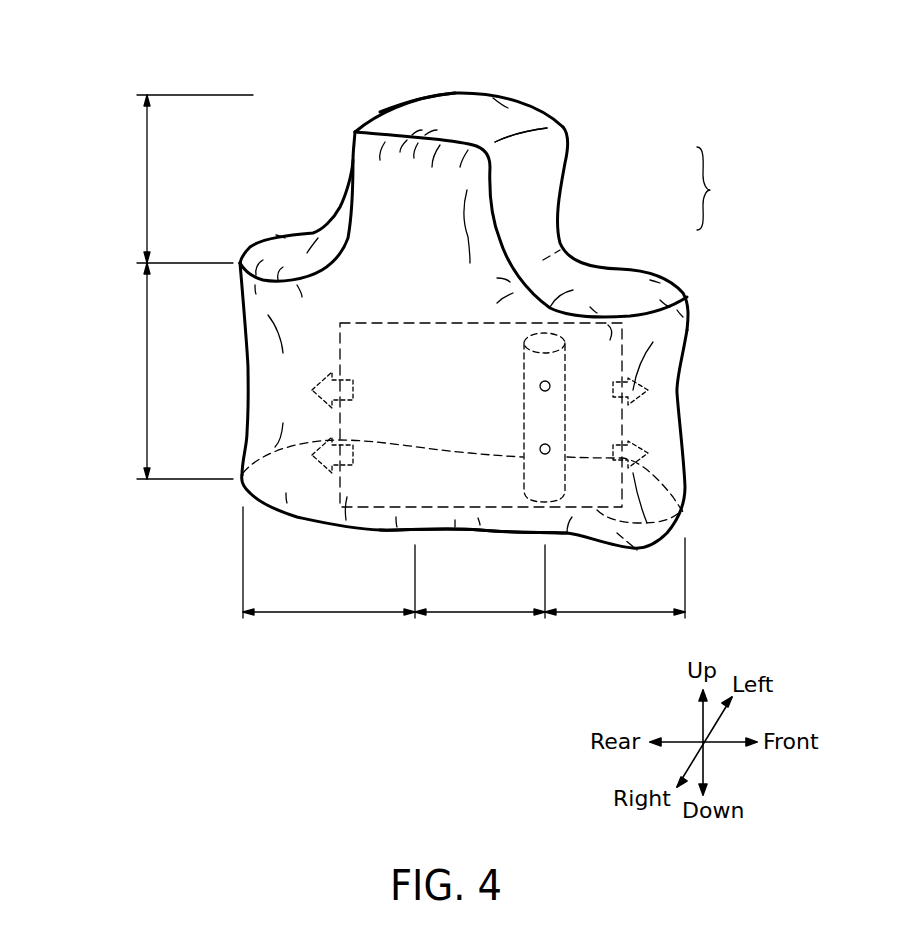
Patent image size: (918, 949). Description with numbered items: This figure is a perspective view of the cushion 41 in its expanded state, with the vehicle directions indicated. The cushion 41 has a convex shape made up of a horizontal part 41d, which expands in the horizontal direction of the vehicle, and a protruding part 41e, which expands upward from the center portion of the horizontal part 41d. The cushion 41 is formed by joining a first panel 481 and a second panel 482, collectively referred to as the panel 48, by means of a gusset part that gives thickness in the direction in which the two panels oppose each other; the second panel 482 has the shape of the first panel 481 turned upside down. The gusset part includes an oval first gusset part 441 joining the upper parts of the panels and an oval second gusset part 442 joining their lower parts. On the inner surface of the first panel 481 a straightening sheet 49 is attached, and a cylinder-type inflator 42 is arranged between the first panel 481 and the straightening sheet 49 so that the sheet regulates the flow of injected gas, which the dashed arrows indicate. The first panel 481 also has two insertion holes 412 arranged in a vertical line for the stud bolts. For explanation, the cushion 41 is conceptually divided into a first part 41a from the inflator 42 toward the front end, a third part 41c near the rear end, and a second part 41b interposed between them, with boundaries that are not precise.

The cushion 41 is at (717, 102).
The first gusset part 441 is at (447, 110).
The second gusset part 442 is at (638, 550).
The panel 48 is at (725, 188).
The first panel 481 is at (477, 218).
The second panel 482 is at (567, 250).
The inflator 42 is at (567, 415).
The insertion holes 412 is at (549, 383).
The straightening sheet 49 is at (684, 512).
The first part 41a is at (615, 578).
The second part 41b is at (480, 581).
The third part 41c is at (329, 562).
The horizontal part 41d is at (154, 371).
The protruding part 41e is at (164, 179).